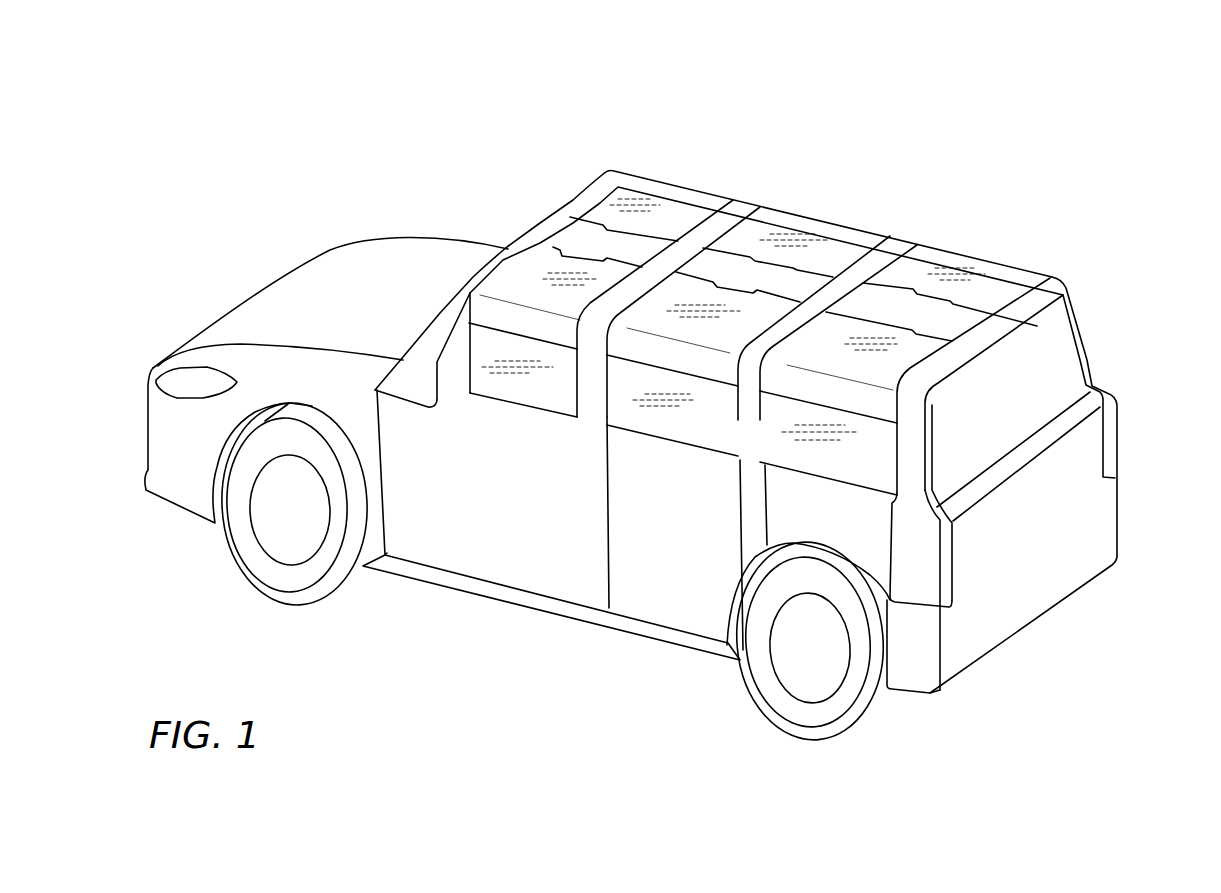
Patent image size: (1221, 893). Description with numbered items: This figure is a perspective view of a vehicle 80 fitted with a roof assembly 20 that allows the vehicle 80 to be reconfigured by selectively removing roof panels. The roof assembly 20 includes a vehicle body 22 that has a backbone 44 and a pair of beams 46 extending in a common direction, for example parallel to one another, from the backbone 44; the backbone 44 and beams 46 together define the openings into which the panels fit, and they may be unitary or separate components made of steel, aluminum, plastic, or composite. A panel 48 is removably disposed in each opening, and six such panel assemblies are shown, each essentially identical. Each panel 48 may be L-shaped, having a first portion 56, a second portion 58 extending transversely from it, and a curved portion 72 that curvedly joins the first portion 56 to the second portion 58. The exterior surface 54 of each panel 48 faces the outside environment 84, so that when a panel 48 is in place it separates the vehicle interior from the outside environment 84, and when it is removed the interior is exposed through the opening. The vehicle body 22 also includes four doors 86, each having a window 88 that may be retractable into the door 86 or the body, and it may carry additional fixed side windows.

The roof assembly 20 is at (1030, 117).
The vehicle body 22 is at (1085, 270).
The backbone 44 is at (550, 230).
The beams 46 is at (747, 460).
The panel 48 is at (523, 263).
The exterior surface 54 is at (545, 410).
The first portion 56 is at (920, 348).
The second portion 58 is at (868, 452).
The curved portion 72 is at (870, 417).
The vehicle 80 is at (247, 245).
The outside environment 84 is at (369, 141).
The door 86 is at (450, 550).
The window 88 is at (493, 383).